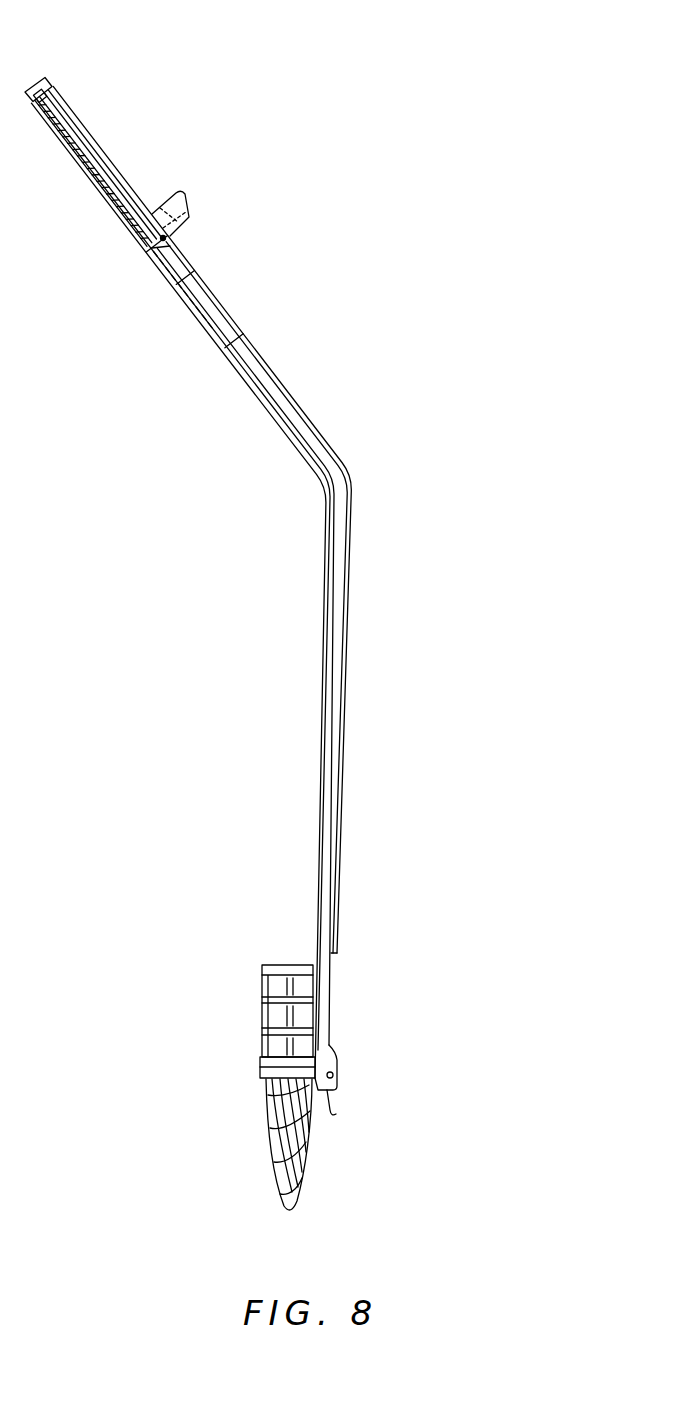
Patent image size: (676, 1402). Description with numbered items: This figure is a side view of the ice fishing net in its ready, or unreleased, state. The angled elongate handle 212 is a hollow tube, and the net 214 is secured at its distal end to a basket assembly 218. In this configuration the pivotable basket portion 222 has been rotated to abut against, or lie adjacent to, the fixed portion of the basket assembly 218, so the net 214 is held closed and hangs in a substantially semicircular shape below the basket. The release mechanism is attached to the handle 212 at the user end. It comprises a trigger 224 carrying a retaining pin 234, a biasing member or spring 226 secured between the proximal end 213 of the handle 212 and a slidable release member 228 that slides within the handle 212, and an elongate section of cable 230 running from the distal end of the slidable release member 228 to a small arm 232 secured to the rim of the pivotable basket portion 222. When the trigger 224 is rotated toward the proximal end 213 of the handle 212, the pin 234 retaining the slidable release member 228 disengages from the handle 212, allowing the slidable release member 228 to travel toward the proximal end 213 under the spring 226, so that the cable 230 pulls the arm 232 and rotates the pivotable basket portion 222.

The handle 212 is at (315, 428).
The proximal end 213 is at (49, 77).
The biasing member or spring 226 is at (100, 160).
The trigger 224 is at (186, 212).
The retaining pin 234 is at (167, 240).
The slidable release member 228 is at (176, 266).
The cable 230 is at (231, 343).
The basket assembly 218 is at (262, 1035).
The pivotable basket portion 222 is at (262, 1072).
The net 214 is at (274, 1173).
The small arm 232 is at (336, 1112).